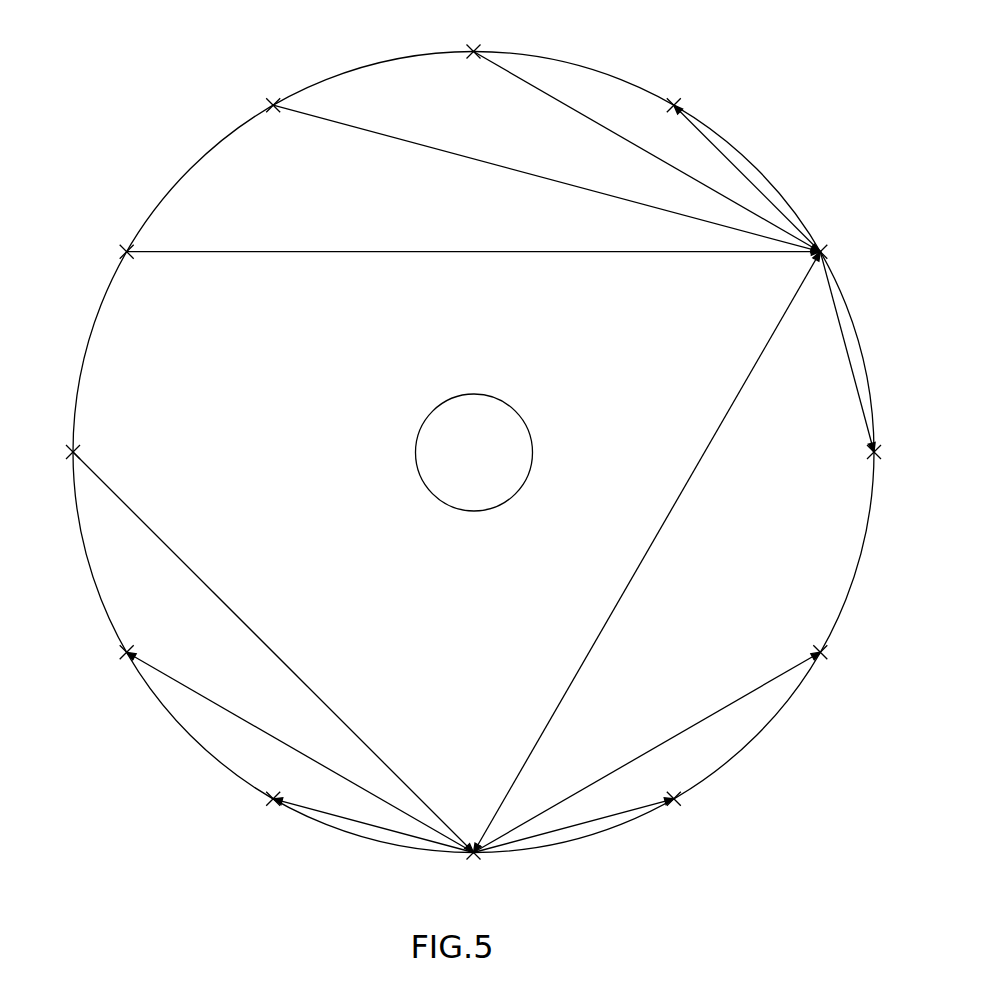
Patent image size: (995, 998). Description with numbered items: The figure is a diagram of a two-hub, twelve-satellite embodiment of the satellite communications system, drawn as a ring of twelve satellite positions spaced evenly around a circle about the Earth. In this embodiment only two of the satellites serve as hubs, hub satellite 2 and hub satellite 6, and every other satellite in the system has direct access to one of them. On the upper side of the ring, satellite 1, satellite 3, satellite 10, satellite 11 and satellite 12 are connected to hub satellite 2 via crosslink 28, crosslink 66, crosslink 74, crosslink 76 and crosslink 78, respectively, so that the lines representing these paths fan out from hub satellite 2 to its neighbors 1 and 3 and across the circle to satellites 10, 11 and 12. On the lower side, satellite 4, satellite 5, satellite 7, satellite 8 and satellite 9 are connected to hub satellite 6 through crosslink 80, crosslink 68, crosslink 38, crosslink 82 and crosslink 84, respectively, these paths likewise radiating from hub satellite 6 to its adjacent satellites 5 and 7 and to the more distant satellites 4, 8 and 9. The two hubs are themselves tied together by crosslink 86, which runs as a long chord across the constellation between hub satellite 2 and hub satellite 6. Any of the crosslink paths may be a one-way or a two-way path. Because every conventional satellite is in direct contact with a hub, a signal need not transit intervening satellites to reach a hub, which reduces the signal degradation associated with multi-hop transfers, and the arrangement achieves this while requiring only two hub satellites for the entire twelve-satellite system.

The satellite 1 is at (686, 91).
The hub satellite 2 is at (833, 238).
The satellite 3 is at (890, 452).
The satellite 4 is at (833, 664).
The satellite 5 is at (685, 812).
The hub satellite 6 is at (473, 870).
The satellite 7 is at (265, 817).
The satellite 8 is at (114, 664).
The satellite 9 is at (58, 455).
The satellite 10 is at (108, 237).
The satellite 11 is at (260, 91).
The satellite 12 is at (469, 37).
The crosslink 28 is at (690, 122).
The crosslink 38 is at (308, 808).
The crosslink 66 is at (847, 350).
The crosslink 68 is at (638, 807).
The crosslink 74 is at (473, 250).
The crosslink 76 is at (548, 179).
The crosslink 78 is at (620, 137).
The crosslink 80 is at (647, 752).
The crosslink 82 is at (203, 697).
The crosslink 84 is at (278, 656).
The crosslink 86 is at (645, 556).